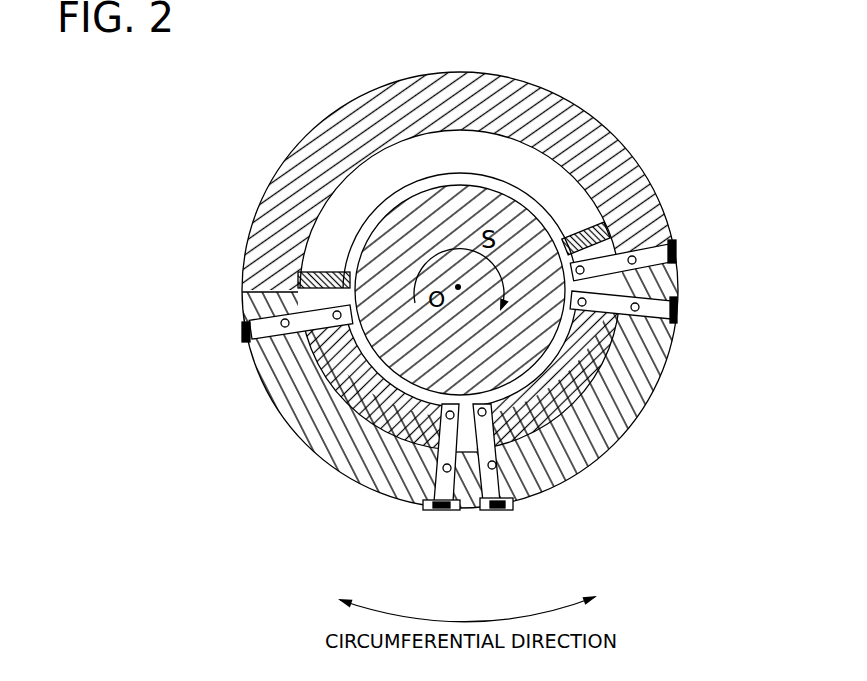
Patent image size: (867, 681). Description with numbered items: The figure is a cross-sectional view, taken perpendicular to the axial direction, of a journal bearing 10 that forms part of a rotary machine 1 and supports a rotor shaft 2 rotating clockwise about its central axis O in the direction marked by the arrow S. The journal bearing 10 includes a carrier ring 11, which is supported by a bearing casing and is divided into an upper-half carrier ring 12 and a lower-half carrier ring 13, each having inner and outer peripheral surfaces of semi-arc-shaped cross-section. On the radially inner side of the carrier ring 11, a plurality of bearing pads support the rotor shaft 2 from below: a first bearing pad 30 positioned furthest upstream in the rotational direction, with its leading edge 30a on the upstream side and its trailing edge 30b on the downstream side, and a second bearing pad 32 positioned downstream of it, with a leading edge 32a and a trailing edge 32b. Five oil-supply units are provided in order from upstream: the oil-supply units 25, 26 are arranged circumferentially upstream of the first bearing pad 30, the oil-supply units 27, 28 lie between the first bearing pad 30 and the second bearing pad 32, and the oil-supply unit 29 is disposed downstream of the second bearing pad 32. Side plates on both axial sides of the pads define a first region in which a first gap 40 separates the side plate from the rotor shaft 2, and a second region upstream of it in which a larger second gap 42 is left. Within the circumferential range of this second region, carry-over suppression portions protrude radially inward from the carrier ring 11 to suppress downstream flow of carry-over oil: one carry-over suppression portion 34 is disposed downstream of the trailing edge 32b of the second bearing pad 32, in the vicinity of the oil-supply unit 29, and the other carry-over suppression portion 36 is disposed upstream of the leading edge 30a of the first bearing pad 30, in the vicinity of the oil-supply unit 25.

The rotary machine 1 is at (783, 62).
The rotor shaft 2 is at (445, 207).
The journal bearing 10 is at (620, 103).
The carrier ring 11 is at (399, 315).
The upper-half carrier ring 12 is at (283, 180).
The lower-half carrier ring 13 is at (298, 425).
The oil-supply unit 25 is at (678, 258).
The oil-supply unit 26 is at (678, 307).
The oil-supply unit 27 is at (502, 507).
The oil-supply unit 28 is at (445, 507).
The oil-supply unit 29 is at (243, 333).
The first bearing pad 30 is at (611, 423).
The leading edge 30a is at (643, 337).
The trailing edge 30b is at (535, 497).
The second bearing pad 32 is at (319, 431).
The leading edge 32a is at (433, 477).
The trailing edge 32b is at (300, 333).
The carry-over suppression portion 34 is at (305, 268).
The carry-over suppression portion 36 is at (618, 200).
The first gap 40 is at (623, 398).
The second gap 42 is at (497, 185).